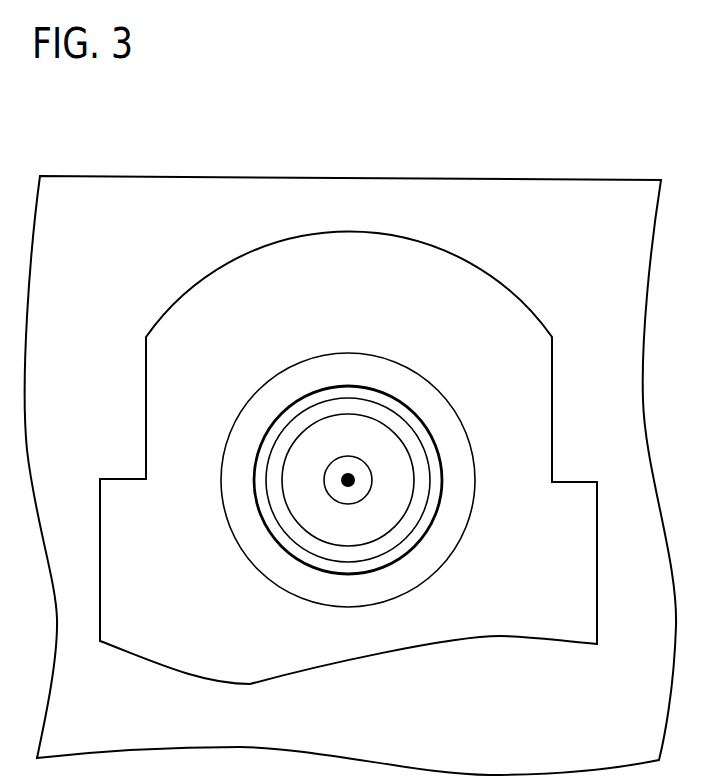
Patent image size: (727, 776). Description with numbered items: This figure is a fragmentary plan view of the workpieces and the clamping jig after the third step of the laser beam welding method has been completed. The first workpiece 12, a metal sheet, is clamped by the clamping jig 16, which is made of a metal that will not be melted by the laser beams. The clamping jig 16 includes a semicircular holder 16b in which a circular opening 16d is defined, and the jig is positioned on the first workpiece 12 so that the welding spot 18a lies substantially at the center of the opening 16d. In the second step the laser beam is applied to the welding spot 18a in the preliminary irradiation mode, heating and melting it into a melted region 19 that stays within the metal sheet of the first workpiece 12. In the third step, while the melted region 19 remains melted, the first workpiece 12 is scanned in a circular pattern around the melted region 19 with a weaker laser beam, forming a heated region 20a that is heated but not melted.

The first workpiece 12 is at (582, 195).
The clamping jig 16 is at (139, 387).
The holder 16b is at (160, 441).
The opening 16d is at (250, 416).
The welding spot 18a is at (352, 478).
The melted region 19 is at (325, 483).
The heated region 20a is at (296, 432).